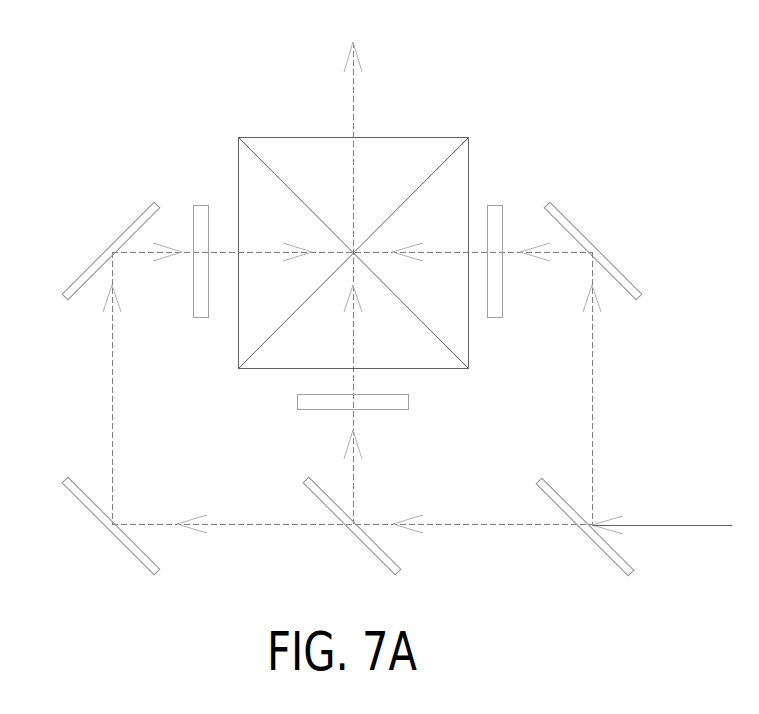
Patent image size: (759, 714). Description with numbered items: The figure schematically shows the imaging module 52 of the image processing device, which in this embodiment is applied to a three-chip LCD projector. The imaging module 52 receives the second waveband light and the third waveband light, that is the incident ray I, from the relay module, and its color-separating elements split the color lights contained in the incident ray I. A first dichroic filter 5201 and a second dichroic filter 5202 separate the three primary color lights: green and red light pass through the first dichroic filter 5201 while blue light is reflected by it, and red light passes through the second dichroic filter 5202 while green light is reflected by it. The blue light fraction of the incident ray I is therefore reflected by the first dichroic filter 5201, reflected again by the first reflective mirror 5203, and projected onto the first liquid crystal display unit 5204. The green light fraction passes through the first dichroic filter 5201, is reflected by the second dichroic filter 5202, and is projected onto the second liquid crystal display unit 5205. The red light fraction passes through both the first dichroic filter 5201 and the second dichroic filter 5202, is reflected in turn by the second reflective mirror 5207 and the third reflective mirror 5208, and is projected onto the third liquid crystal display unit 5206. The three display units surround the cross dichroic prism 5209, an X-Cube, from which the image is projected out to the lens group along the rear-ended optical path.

The imaging module 52 is at (193, 58).
The incident ray I is at (700, 525).
The first dichroic filter 5201 is at (633, 578).
The second dichroic filter 5202 is at (398, 575).
The first reflective mirror 5203 is at (603, 253).
The first liquid crystal display unit 5204 is at (502, 288).
The second liquid crystal display unit 5205 is at (408, 400).
The third liquid crystal display unit 5206 is at (203, 318).
The second reflective mirror 5207 is at (62, 480).
The third reflective mirror 5208 is at (79, 282).
The cross dichroic prism 5209 is at (432, 137).